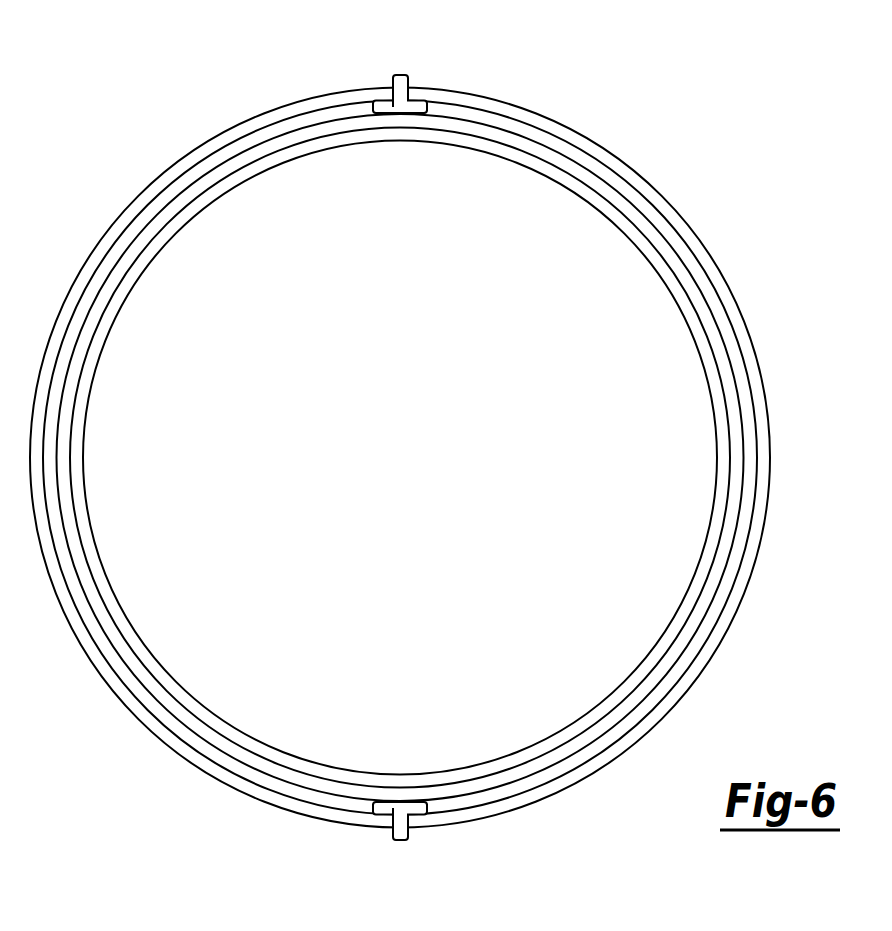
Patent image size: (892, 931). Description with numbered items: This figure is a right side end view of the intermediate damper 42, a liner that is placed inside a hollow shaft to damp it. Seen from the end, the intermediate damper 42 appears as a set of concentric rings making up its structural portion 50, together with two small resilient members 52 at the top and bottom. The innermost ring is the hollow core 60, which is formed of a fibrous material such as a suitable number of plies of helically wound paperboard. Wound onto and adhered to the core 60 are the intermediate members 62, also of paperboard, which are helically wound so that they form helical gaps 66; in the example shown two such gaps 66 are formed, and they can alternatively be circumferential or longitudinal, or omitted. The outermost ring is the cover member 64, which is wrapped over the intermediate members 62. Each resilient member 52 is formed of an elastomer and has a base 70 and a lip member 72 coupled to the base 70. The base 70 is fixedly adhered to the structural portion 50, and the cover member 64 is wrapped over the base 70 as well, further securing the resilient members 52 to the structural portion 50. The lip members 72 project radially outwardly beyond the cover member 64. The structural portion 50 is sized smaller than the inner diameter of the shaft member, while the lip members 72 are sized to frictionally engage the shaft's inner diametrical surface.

The intermediate damper 42 is at (427, 458).
The structural portion 50 is at (668, 210).
The resilient member 52 is at (419, 459).
The core 60 is at (723, 433).
The intermediate member 62 is at (712, 330).
The cover member 64 is at (710, 262).
The helical gap 66 is at (427, 108).
The base 70 is at (419, 436).
The lip member 72 is at (408, 90).